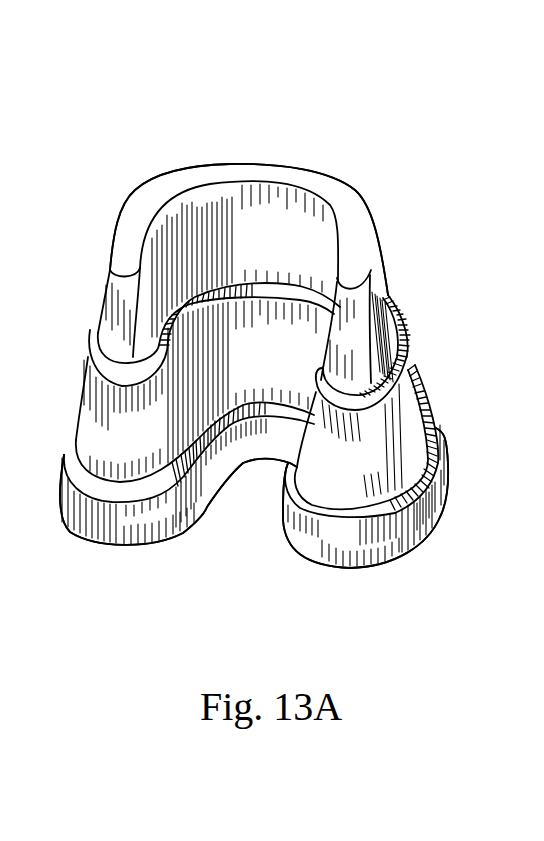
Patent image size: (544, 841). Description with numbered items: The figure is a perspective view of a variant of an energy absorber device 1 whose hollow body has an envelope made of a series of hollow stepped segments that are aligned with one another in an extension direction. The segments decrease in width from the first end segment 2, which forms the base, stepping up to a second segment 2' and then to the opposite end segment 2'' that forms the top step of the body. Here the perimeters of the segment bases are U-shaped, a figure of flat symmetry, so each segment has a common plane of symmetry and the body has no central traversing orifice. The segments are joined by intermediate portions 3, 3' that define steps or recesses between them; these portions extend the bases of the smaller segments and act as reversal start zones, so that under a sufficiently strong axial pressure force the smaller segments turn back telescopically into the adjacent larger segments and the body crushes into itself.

The energy absorber device 1 is at (114, 141).
The first end segment 2 is at (254, 530).
The second segment 2' is at (289, 394).
The opposite end segment 2'' is at (278, 273).
The intermediate portion 3 is at (285, 441).
The intermediate portion 3' is at (283, 343).